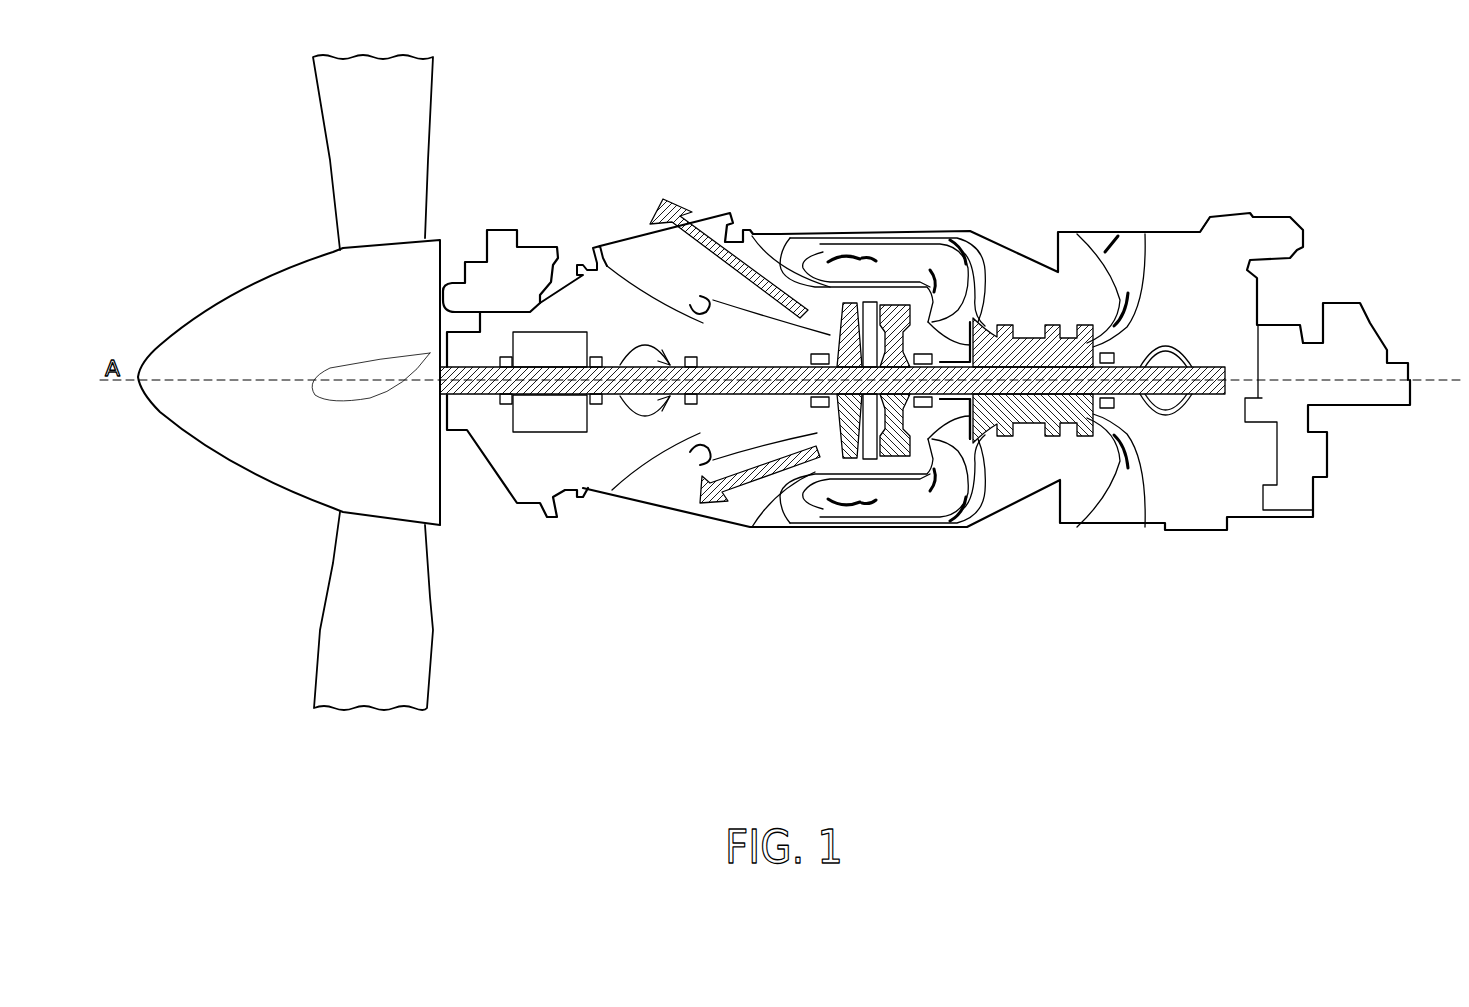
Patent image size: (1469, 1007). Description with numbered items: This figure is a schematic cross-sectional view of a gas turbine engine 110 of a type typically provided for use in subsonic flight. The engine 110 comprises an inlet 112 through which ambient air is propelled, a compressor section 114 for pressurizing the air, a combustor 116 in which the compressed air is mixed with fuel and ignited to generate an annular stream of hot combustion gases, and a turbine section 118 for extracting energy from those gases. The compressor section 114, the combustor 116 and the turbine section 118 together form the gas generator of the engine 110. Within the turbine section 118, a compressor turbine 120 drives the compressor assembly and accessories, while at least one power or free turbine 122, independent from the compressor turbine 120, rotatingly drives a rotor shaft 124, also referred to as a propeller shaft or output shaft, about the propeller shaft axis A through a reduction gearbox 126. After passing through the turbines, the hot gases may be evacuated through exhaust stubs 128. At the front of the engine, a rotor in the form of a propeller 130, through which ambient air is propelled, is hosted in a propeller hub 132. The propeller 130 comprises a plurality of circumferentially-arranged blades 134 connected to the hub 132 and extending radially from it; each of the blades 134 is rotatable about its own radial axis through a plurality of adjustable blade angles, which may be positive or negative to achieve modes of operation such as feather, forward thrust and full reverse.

The gas turbine engine 110 is at (786, 118).
The inlet 112 is at (1125, 208).
The compressor section 114 is at (1015, 268).
The combustor 116 is at (907, 262).
The turbine section 118 is at (873, 380).
The compressor turbine 120 is at (977, 482).
The power or free turbine 122 is at (847, 380).
The rotor shaft 124 is at (568, 420).
The reduction gearbox 126 is at (552, 380).
The exhaust stubs 128 is at (640, 208).
The propeller 130 is at (258, 162).
The propeller hub 132 is at (265, 297).
The blades 134 is at (343, 131).